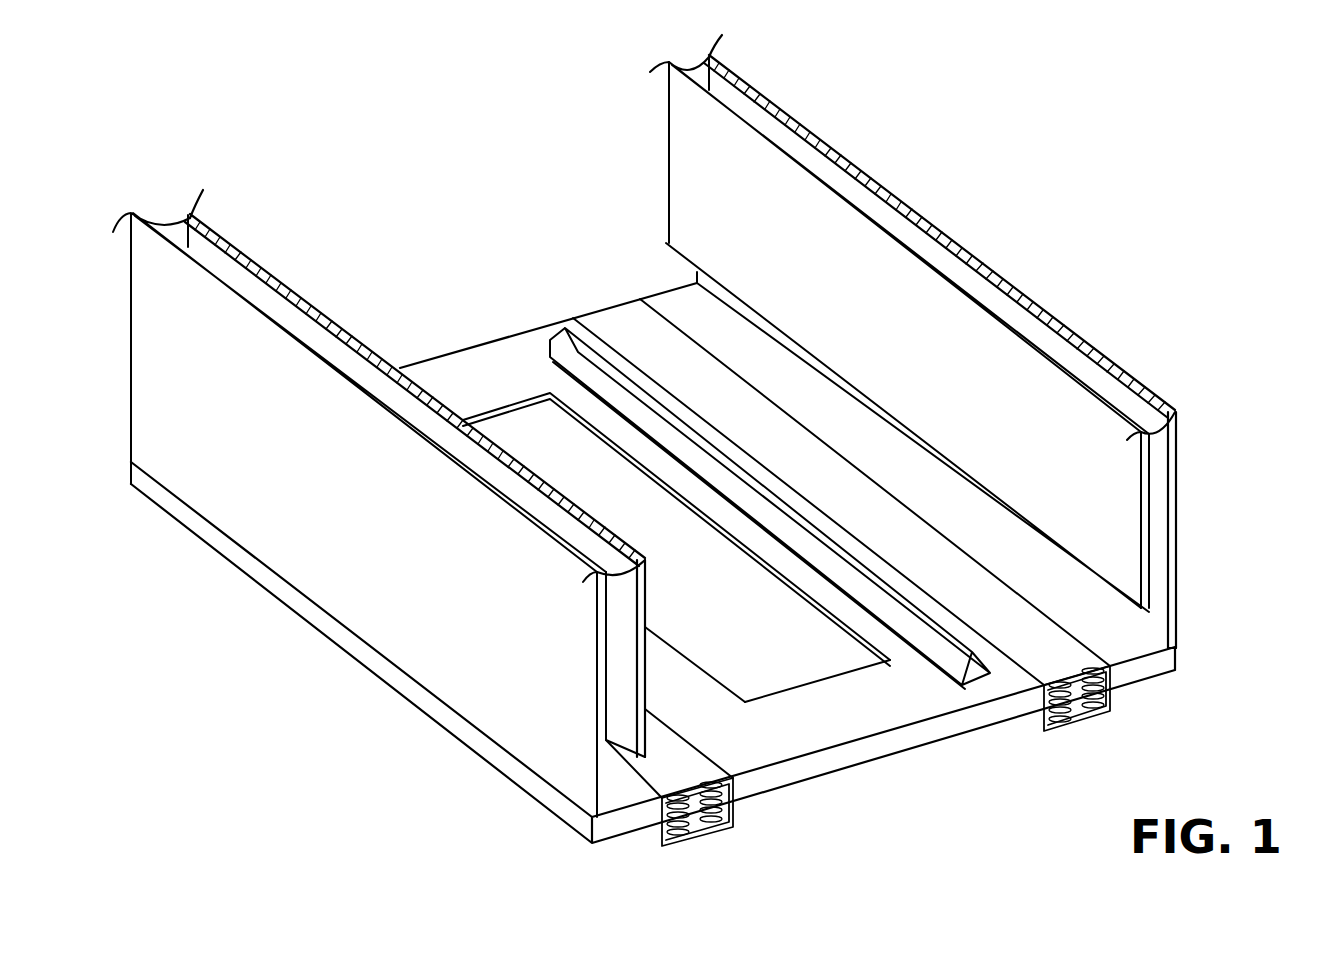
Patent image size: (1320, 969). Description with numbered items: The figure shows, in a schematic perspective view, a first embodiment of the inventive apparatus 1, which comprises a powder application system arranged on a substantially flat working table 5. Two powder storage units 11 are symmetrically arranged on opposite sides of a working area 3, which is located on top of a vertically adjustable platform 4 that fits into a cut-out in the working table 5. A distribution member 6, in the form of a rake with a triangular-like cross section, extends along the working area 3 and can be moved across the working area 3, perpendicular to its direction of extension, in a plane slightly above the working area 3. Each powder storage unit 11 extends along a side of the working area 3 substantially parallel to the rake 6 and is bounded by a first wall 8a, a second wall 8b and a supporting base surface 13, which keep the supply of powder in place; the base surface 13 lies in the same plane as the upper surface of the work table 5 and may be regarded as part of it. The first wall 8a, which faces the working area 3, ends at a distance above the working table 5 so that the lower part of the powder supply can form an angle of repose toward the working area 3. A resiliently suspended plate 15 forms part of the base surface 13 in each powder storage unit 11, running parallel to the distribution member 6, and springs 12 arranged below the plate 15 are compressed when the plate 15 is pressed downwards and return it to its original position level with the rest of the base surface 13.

The apparatus 1 is at (436, 144).
The working area 3 is at (520, 440).
The vertically adjustable platform 4 is at (780, 655).
The working table 5 is at (946, 730).
The distribution member 6 is at (575, 357).
The first wall 8a is at (312, 246).
The second wall 8b is at (1016, 244).
The powder storage unit 11 is at (518, 732).
The springs 12 is at (688, 828).
The supporting base surface 13 is at (1082, 613).
The resiliently suspended plate 15 is at (1055, 655).